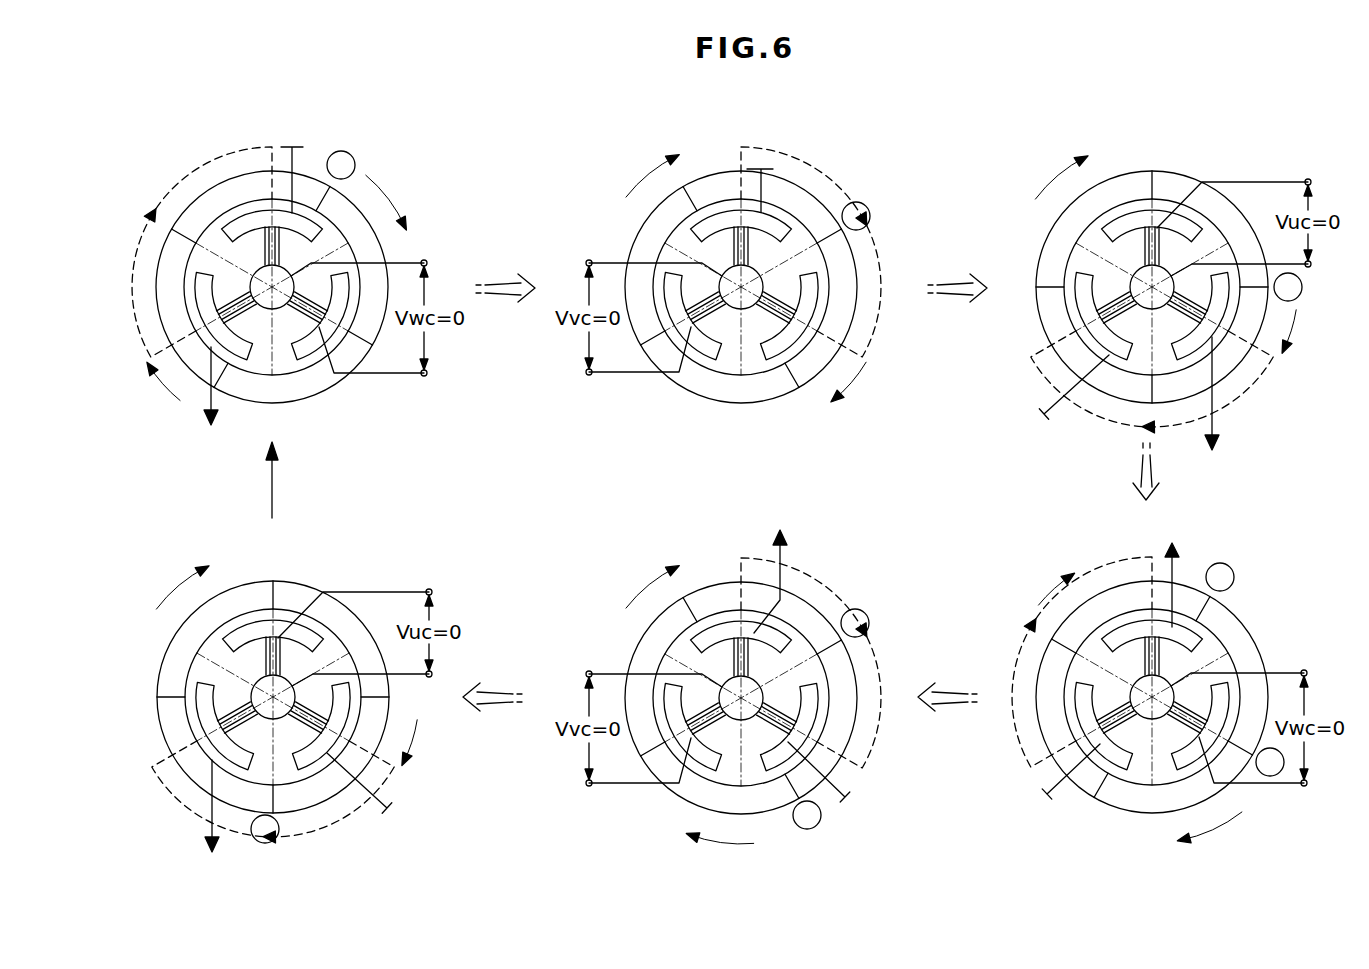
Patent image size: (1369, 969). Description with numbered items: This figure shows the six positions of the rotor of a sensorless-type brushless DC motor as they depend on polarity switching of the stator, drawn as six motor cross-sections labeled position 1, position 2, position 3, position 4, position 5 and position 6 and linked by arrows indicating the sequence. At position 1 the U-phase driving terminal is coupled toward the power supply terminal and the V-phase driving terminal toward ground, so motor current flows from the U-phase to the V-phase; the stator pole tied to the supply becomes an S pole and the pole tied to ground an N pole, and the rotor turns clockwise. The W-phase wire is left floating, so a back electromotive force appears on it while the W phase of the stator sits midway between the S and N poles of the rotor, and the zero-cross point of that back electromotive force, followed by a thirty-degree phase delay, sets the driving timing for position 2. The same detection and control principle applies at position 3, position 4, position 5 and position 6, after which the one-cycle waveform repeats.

The rotor position 1 is at (298, 257).
The rotor position 2 is at (718, 246).
The rotor position 3 is at (1171, 270).
The rotor position 4 is at (1175, 677).
The rotor position 5 is at (723, 677).
The rotor position 6 is at (307, 681).